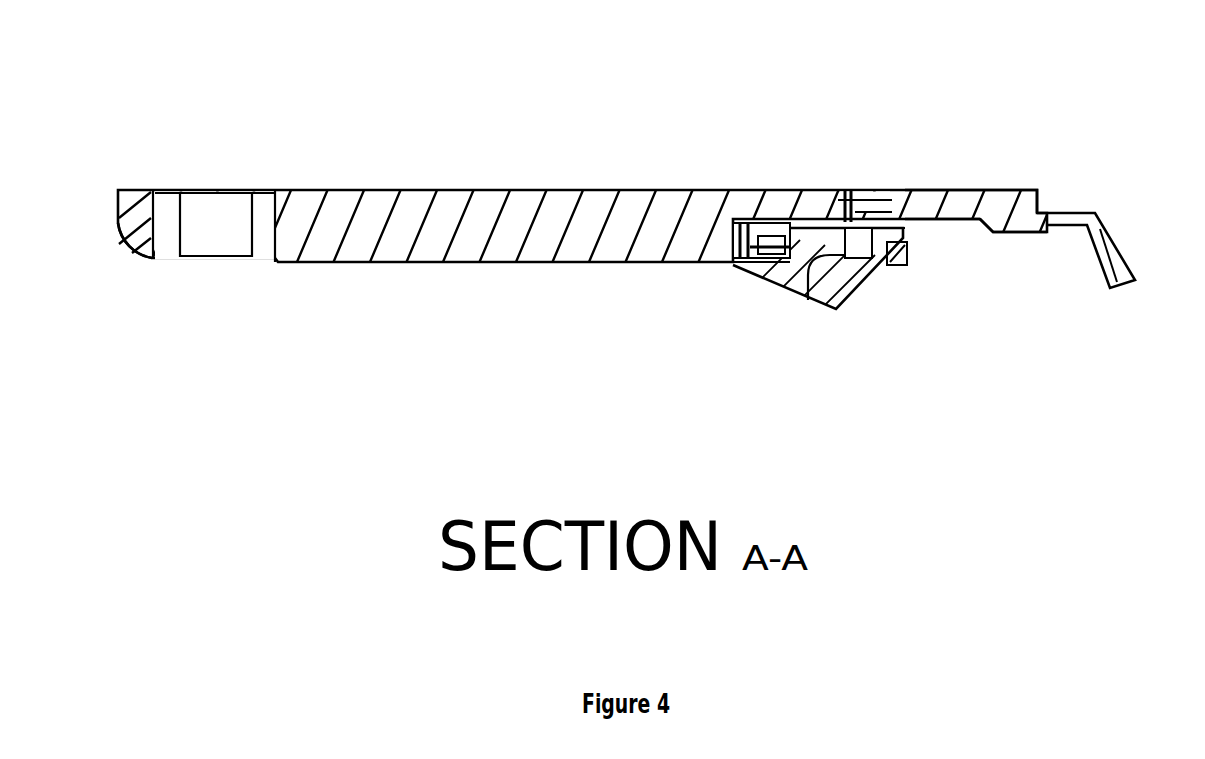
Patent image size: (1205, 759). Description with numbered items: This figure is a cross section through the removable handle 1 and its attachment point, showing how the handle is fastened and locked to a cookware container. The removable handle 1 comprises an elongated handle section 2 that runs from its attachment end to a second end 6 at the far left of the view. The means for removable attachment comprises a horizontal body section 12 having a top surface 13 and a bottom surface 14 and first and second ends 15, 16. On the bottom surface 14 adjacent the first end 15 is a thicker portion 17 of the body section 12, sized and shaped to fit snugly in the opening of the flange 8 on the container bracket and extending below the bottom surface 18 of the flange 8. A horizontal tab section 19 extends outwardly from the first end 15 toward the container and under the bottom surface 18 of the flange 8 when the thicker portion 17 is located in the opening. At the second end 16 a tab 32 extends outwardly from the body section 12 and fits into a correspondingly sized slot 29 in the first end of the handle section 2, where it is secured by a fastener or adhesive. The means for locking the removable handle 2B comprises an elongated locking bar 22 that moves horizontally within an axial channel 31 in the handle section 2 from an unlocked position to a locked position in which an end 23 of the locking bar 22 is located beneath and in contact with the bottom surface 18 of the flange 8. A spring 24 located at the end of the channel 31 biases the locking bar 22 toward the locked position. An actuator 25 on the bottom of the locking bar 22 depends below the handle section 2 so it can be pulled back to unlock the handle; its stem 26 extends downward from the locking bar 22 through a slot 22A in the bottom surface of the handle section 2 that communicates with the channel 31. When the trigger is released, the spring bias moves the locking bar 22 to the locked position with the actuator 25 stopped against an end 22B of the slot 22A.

The removable handle 1 is at (302, 163).
The elongated handle section 2 is at (415, 230).
The second end 6 is at (137, 253).
The flange 8 is at (1066, 213).
The horizontal body section 12 is at (956, 190).
The top surface 13 is at (932, 190).
The bottom surface 14 is at (960, 224).
The first end 15 is at (1028, 197).
The second end 16 is at (900, 190).
The thicker portion 17 is at (1015, 217).
The bottom surface of the flange 18 is at (940, 227).
The horizontal tab section 19 is at (1043, 234).
The elongated locking bar 22 is at (860, 222).
The slot 22A is at (752, 265).
The end of slot 22B is at (808, 300).
The end of the locking bar 23 is at (905, 245).
The spring 24 is at (745, 238).
The actuator 25 is at (780, 300).
The stem 26 is at (767, 275).
The slot 29 is at (838, 195).
The axial channel 31 is at (725, 263).
The tab 32 is at (843, 190).
The means for locking the removable handle 2B is at (893, 285).